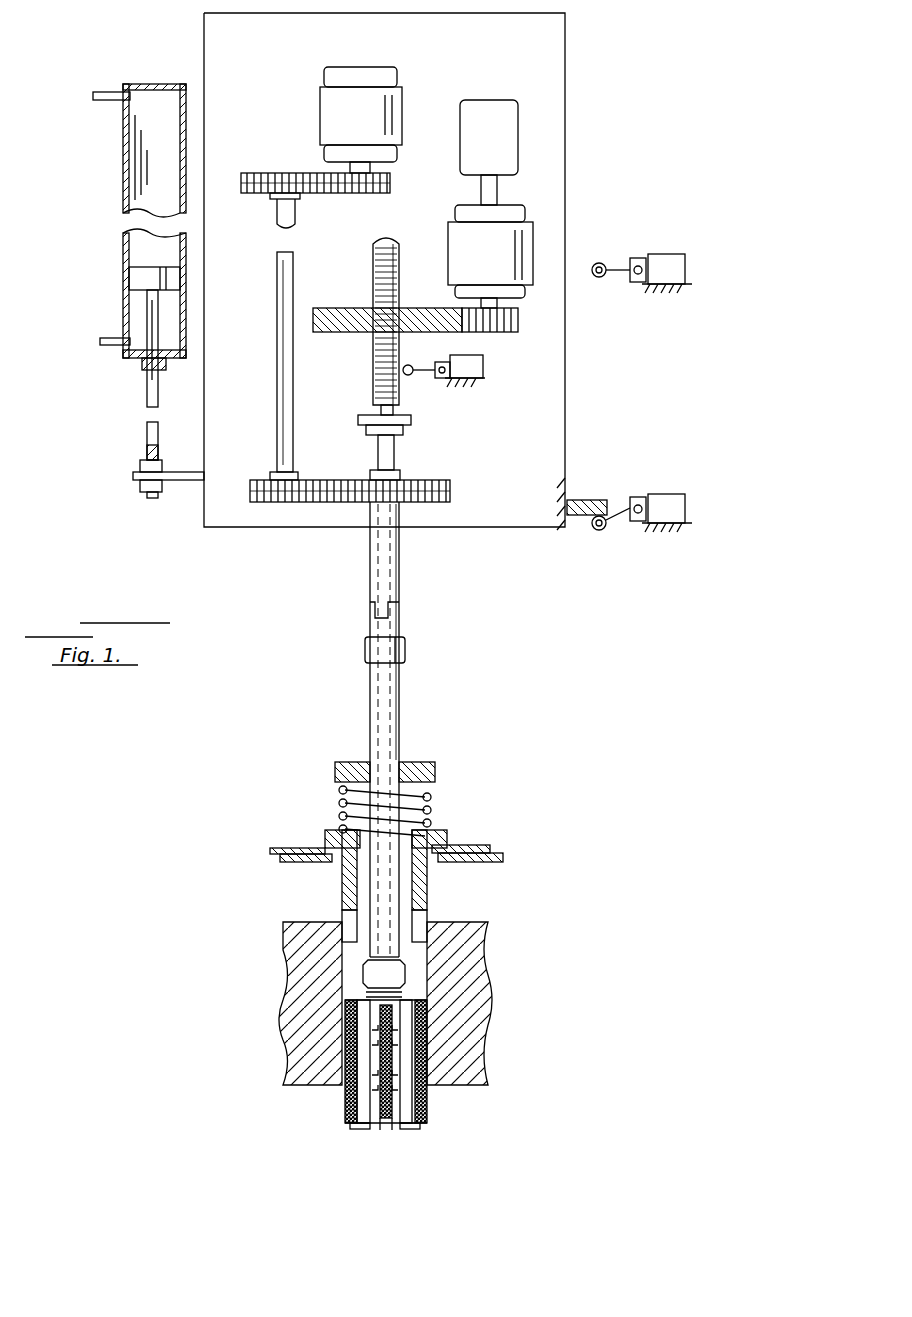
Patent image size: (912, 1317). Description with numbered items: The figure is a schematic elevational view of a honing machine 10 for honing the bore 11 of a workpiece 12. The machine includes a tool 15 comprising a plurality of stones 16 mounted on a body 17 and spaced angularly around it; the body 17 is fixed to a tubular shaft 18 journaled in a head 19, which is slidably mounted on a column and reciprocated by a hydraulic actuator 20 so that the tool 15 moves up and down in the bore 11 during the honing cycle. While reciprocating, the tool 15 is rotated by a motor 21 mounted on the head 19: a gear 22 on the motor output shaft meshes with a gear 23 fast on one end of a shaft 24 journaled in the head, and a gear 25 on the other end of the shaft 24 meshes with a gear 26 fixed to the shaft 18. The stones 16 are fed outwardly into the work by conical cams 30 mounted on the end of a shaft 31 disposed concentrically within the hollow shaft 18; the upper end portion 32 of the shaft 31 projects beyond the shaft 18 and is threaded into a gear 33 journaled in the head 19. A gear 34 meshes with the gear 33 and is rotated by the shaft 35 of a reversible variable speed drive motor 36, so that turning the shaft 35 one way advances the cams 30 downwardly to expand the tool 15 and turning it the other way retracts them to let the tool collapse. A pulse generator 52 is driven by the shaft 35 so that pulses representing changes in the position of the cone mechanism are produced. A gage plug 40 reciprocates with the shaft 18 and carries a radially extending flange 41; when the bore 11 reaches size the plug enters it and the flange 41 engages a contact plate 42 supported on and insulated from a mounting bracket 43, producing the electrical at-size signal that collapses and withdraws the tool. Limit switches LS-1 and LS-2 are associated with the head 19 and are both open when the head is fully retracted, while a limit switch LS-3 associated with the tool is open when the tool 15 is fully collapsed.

The honing machine 10 is at (305, 822).
The bore 11 is at (348, 972).
The workpiece 12 is at (298, 995).
The tool 15 is at (340, 1134).
The stones 16 is at (342, 1105).
The body 17 is at (390, 1128).
The tubular shaft 18 is at (375, 872).
The head 19 is at (208, 530).
The hydraulic actuator 20 is at (124, 183).
The motor 21 is at (320, 104).
The gear 22 is at (365, 194).
The gear 23 is at (279, 176).
The shaft 24 is at (277, 315).
The gear 25 is at (300, 503).
The gear 26 is at (440, 480).
The conical cams 30 is at (412, 1083).
The shaft 31 is at (378, 722).
The upper end portion 32 is at (374, 372).
The gear 33 is at (372, 308).
The gear 34 is at (495, 333).
The shaft 35 is at (525, 290).
The reversible variable speed drive motor 36 is at (525, 215).
The gage plug 40 is at (428, 900).
The flange 41 is at (430, 838).
The contact plate 42 is at (486, 842).
The mounting bracket 43 is at (503, 857).
The pulse generator 52 is at (485, 100).
The limit switch LS-1 is at (672, 258).
The limit switch LS-2 is at (672, 497).
The limit switch LS-3 is at (466, 380).